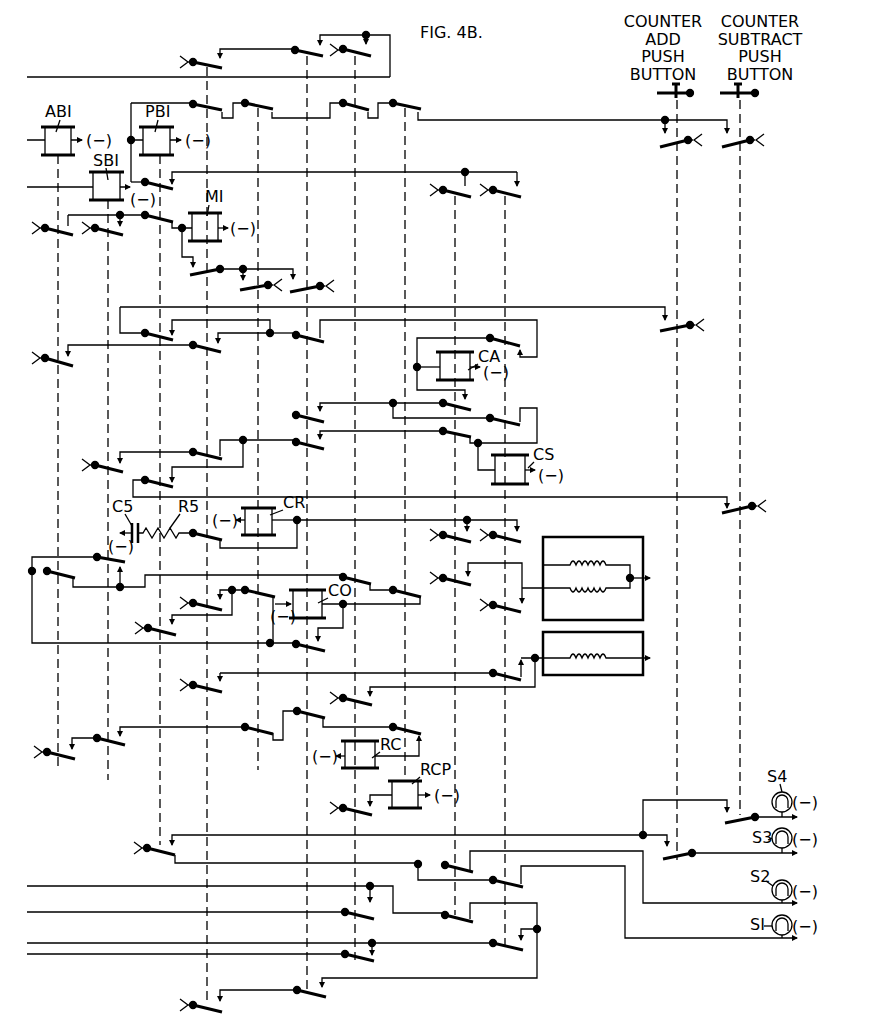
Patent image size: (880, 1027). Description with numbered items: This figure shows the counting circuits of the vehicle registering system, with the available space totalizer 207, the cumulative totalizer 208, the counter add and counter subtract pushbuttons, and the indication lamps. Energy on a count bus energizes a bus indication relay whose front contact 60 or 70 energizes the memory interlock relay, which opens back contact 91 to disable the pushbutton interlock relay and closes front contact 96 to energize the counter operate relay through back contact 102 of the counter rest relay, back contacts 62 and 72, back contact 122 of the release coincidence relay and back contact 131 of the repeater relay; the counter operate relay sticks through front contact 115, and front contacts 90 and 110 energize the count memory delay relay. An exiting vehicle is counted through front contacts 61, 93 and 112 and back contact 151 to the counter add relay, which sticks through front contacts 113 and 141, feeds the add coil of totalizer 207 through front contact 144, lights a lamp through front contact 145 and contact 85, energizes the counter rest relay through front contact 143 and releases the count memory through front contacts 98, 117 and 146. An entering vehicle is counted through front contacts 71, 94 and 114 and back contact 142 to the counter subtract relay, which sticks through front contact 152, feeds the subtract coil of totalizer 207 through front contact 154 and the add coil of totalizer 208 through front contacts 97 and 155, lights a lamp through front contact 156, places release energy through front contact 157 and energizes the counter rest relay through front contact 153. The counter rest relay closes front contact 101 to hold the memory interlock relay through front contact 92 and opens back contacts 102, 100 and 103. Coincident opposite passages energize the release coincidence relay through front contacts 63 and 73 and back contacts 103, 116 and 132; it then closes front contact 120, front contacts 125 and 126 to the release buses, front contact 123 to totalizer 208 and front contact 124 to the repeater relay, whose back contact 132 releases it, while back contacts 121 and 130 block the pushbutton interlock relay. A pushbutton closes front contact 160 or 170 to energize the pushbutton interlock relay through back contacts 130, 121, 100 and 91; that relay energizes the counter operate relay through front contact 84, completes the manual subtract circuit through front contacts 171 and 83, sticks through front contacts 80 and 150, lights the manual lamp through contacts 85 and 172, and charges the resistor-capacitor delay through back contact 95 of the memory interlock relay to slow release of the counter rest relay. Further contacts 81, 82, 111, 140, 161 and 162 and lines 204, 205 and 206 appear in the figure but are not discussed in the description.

The front contact of relay ABI 60 is at (64, 236).
The front contact of relay ABI 61 is at (64, 366).
The back contact of relay ABI 62 is at (54, 576).
The front contact of relay ABI 63 is at (60, 760).
The front contact of relay SBI 70 is at (114, 236).
The front contact of relay SBI 71 is at (102, 473).
The back contact of relay SBI 72 is at (106, 556).
The front contact of relay SBI 73 is at (112, 746).
The front contact of relay PBI 80 is at (175, 190).
The relay contact 81 is at (170, 216).
The relay contact 82 is at (158, 330).
The front contact of relay PBI 83 is at (154, 478).
The front contact of relay PBI 84 is at (156, 626).
The contact of relay PBI 85 is at (158, 848).
The front contact of relay MI 90 is at (205, 59).
The back contact of relay MI 91 is at (200, 100).
The front contact of relay MI 92 is at (214, 270).
The front contact of relay MI 93 is at (200, 353).
The front contact of relay MI 94 is at (204, 450).
The back contact of relay MI 95 is at (204, 540).
The front contact of relay MI 96 is at (212, 600).
The front contact of relay MI 97 is at (210, 683).
The front contact of relay MI 98 is at (202, 1004).
The back contact of relay CR 100 is at (268, 105).
The front contact of relay CR 101 is at (240, 290).
The back contact of relay CR 102 is at (255, 602).
The back contact of relay CR 103 is at (256, 735).
The front contact of relay CO 110 is at (300, 46).
The relay contact 111 is at (312, 284).
The front contact of relay CO 112 is at (314, 342).
The front contact of relay CO 113 is at (310, 412).
The front contact of relay CO 114 is at (312, 450).
The front contact of relay CO 115 is at (312, 650).
The back contact of relay CO 116 is at (306, 710).
The front contact of relay CO 117 is at (300, 989).
The front contact of relay RC 120 is at (362, 57).
The back contact of relay RC 121 is at (347, 110).
The back contact of relay RC 122 is at (345, 576).
The front contact of relay RC 123 is at (366, 706).
The front contact of relay RC 124 is at (372, 812).
The front contact of relay RC 125 is at (356, 918).
The front contact of relay RC 126 is at (376, 958).
The back contact of relay RCP 130 is at (415, 106).
The back contact of relay RCP 131 is at (398, 590).
The back contact of relay RCP 132 is at (412, 728).
The relay contact 140 is at (448, 196).
The front contact of relay CA 141 is at (470, 408).
The back contact of relay CA 142 is at (446, 438).
The front contact of relay CA 143 is at (450, 542).
The front contact of relay CA 144 is at (452, 586).
The front contact of relay CA 145 is at (446, 864).
The front contact of relay CA 146 is at (448, 914).
The front contact of relay CS 150 is at (515, 196).
The back contact of relay CS 151 is at (512, 350).
The front contact of relay CS 152 is at (510, 420).
The front contact of relay CS 153 is at (508, 543).
The front contact of relay CS 154 is at (506, 612).
The front contact of relay CS 155 is at (500, 672).
The front contact of relay CS 156 is at (524, 884).
The front contact of relay CS 157 is at (510, 950).
The front contact of the counter add pushbutton 160 is at (680, 146).
The counter add contact 161 is at (670, 330).
The counter add contact 162 is at (678, 858).
The front contact of the counter subtract pushbutton 170 is at (744, 146).
The front contact of the counter subtract pushbutton 171 is at (745, 512).
The front contact of the counter subtract pushbutton 172 is at (730, 820).
The signal lines 204 is at (92, 888).
The signal lines 205 is at (30, 956).
The supply line 206 is at (33, 77).
The available space totalizer 207 is at (652, 537).
The cumulative totalizer 208 is at (598, 690).